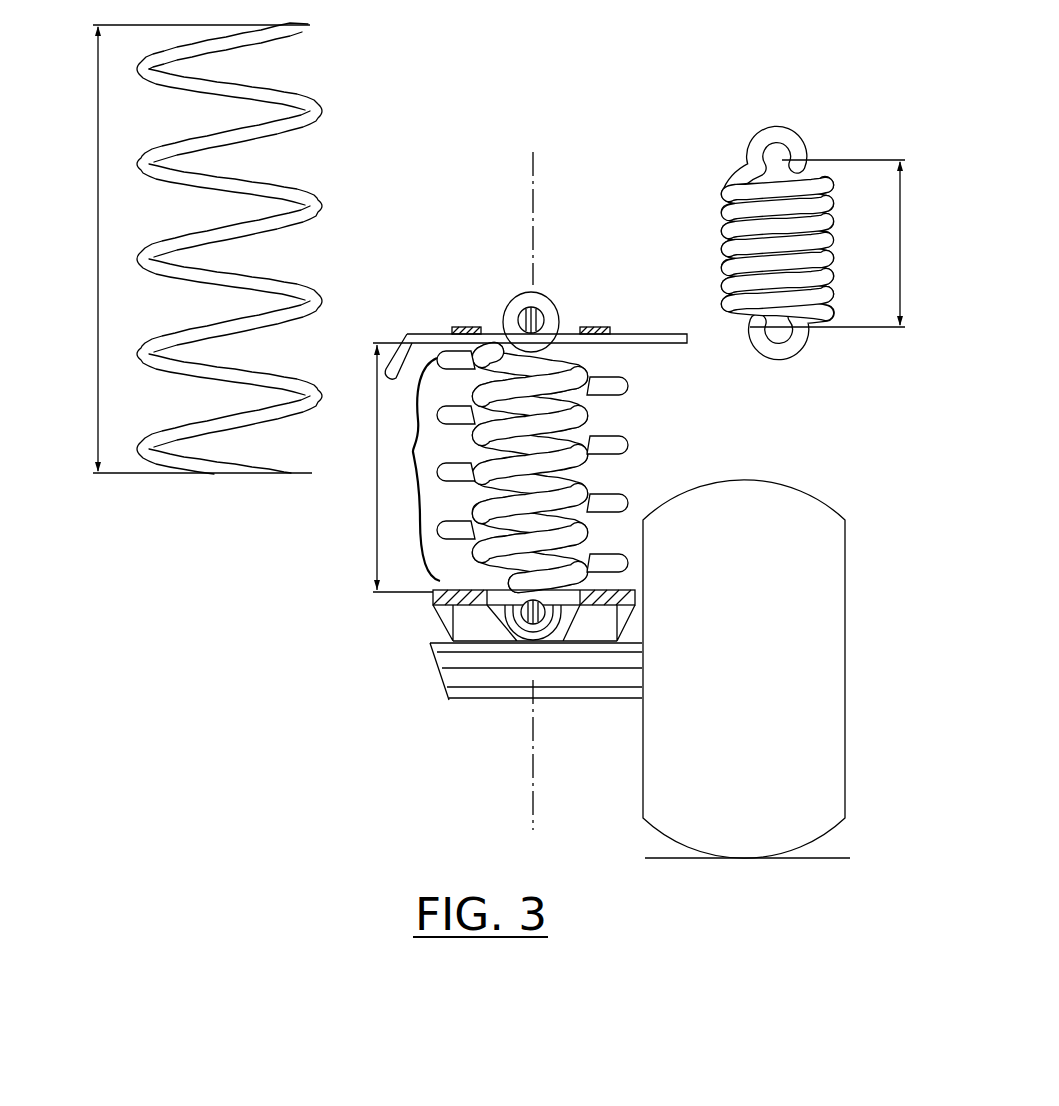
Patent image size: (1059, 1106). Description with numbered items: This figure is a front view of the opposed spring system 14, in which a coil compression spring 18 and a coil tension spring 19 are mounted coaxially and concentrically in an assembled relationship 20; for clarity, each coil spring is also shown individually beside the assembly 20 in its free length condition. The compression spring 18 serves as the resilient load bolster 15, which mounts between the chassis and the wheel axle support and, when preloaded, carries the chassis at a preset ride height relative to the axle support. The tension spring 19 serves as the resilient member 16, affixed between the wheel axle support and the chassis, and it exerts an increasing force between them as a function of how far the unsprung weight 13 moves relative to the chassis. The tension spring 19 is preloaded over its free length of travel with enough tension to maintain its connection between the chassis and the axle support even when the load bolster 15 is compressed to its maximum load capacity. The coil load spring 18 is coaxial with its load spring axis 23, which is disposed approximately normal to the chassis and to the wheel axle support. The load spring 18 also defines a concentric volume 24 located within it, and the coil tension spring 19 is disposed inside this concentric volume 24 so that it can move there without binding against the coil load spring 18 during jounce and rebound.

The unsprung weight 13 is at (607, 668).
The opposed spring system 14 is at (502, 283).
The resilient load bolster 15 is at (320, 103).
The resilient member 16 is at (833, 293).
The coil compression spring 18 is at (317, 197).
The coil tension spring 19 is at (738, 175).
The assembled relationship 20 is at (413, 452).
The load spring axis 23 is at (540, 212).
The concentric volume 24 is at (386, 314).